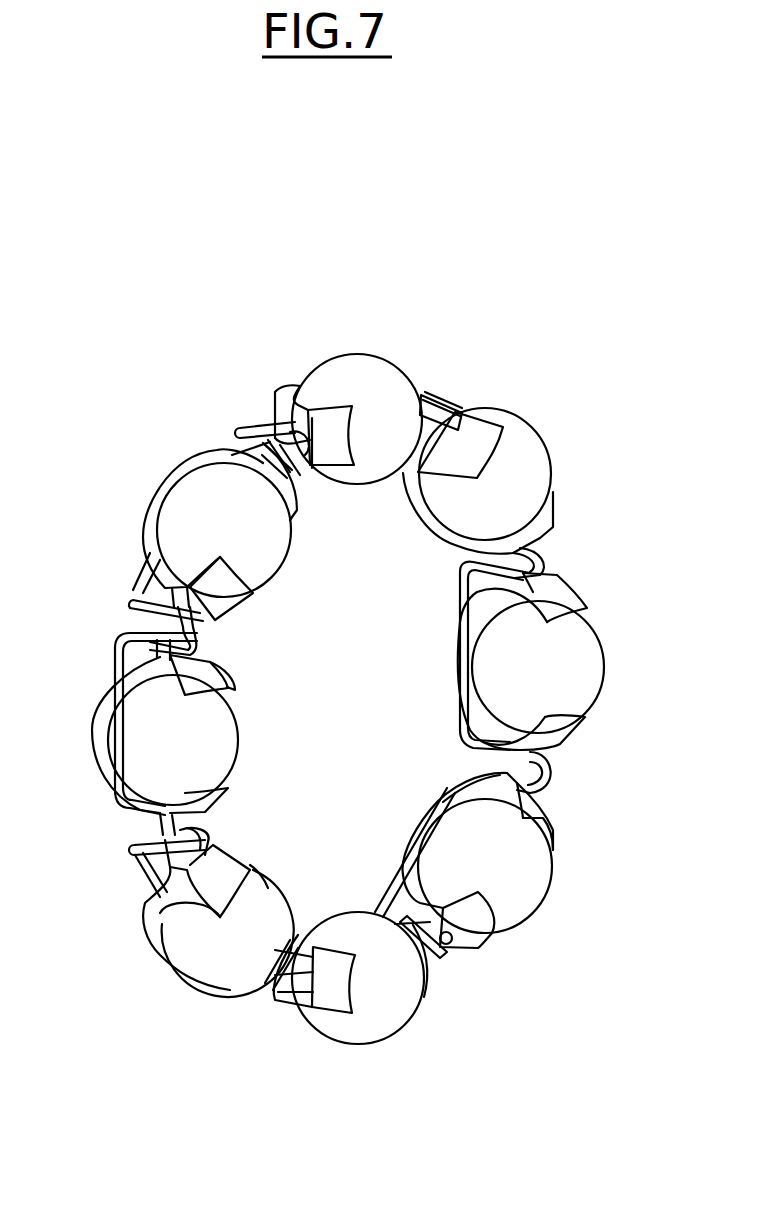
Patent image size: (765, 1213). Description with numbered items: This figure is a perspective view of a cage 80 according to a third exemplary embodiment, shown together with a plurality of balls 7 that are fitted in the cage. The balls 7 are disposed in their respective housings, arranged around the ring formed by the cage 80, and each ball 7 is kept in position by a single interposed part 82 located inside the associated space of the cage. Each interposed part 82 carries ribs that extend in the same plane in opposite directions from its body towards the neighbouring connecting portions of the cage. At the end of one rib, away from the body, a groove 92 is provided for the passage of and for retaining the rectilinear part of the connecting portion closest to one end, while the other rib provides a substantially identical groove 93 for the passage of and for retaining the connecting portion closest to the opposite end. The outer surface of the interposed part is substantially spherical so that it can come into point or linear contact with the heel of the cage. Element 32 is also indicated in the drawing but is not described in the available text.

The ball 7 is at (540, 457).
The cage 80 is at (476, 316).
The connecting pin 32 is at (244, 427).
The interposed part 82 is at (144, 538).
The groove 92 is at (186, 626).
The groove 93 is at (140, 843).